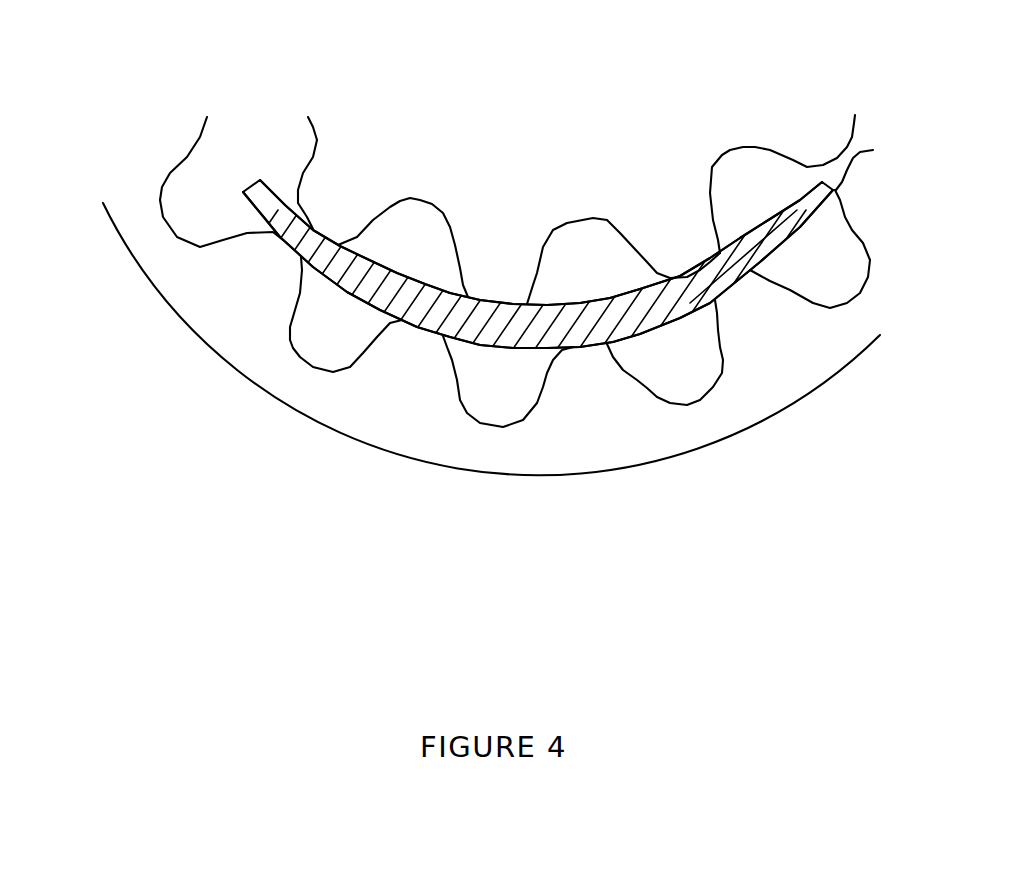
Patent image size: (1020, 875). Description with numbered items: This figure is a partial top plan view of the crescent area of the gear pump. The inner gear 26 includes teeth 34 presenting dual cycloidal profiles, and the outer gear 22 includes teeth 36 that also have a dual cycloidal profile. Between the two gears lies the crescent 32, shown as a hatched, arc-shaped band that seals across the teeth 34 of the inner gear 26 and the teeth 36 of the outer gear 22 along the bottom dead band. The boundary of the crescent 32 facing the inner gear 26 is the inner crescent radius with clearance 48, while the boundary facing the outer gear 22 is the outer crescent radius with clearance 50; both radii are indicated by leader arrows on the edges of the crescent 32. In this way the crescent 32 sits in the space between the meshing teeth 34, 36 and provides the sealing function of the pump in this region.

The outer gear 22 is at (393, 423).
The inner gear 26 is at (516, 222).
The crescent 32 is at (597, 307).
The teeth 34 is at (529, 251).
The teeth 36 is at (583, 363).
The inner crescent radius with clearance 48 is at (313, 223).
The outer crescent radius with clearance 50 is at (290, 245).